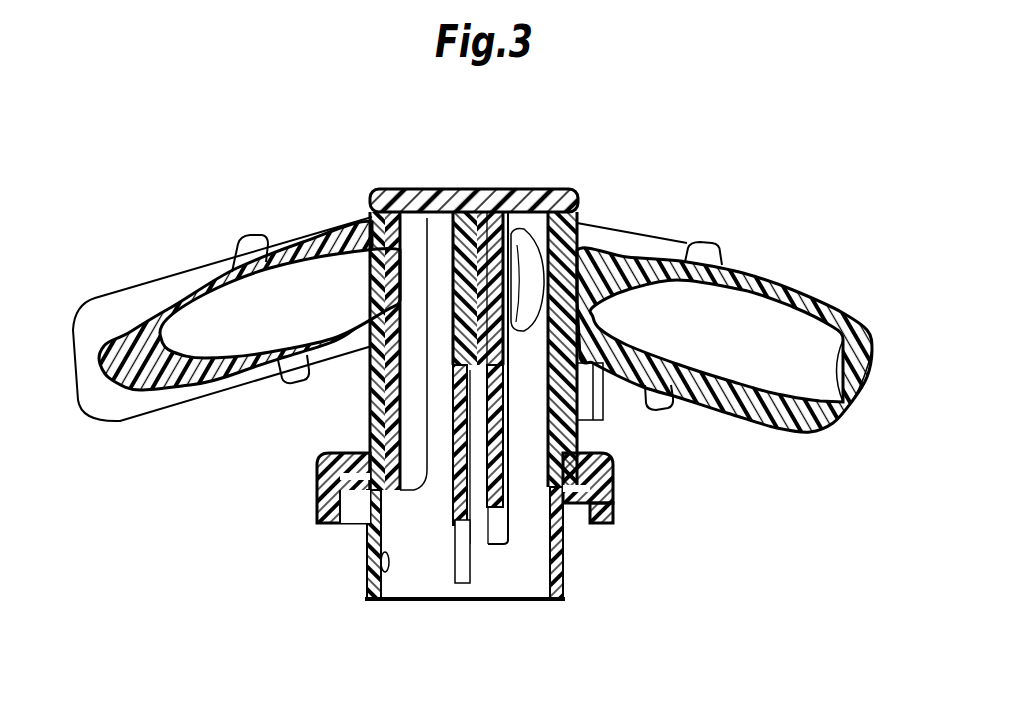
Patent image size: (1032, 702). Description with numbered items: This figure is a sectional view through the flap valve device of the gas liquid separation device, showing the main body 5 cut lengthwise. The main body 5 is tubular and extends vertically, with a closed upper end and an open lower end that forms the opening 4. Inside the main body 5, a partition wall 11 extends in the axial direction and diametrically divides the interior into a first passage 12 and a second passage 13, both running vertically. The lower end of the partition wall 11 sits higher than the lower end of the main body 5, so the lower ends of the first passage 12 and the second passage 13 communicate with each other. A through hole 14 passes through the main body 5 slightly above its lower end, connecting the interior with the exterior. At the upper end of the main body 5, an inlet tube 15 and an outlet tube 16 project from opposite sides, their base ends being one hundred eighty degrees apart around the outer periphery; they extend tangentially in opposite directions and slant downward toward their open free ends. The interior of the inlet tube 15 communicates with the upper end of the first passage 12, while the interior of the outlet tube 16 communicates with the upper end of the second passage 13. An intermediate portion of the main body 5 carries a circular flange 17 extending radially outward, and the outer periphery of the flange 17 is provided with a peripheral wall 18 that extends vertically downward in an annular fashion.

The opening 4 is at (552, 572).
The main body 5 is at (385, 185).
The partition wall 11 is at (458, 521).
The first passage 12 is at (549, 468).
The second passage 13 is at (412, 458).
The through hole 14 is at (392, 576).
The inlet tube 15 is at (743, 270).
The outlet tube 16 is at (147, 298).
The flange 17 is at (612, 471).
The peripheral wall 18 is at (612, 516).